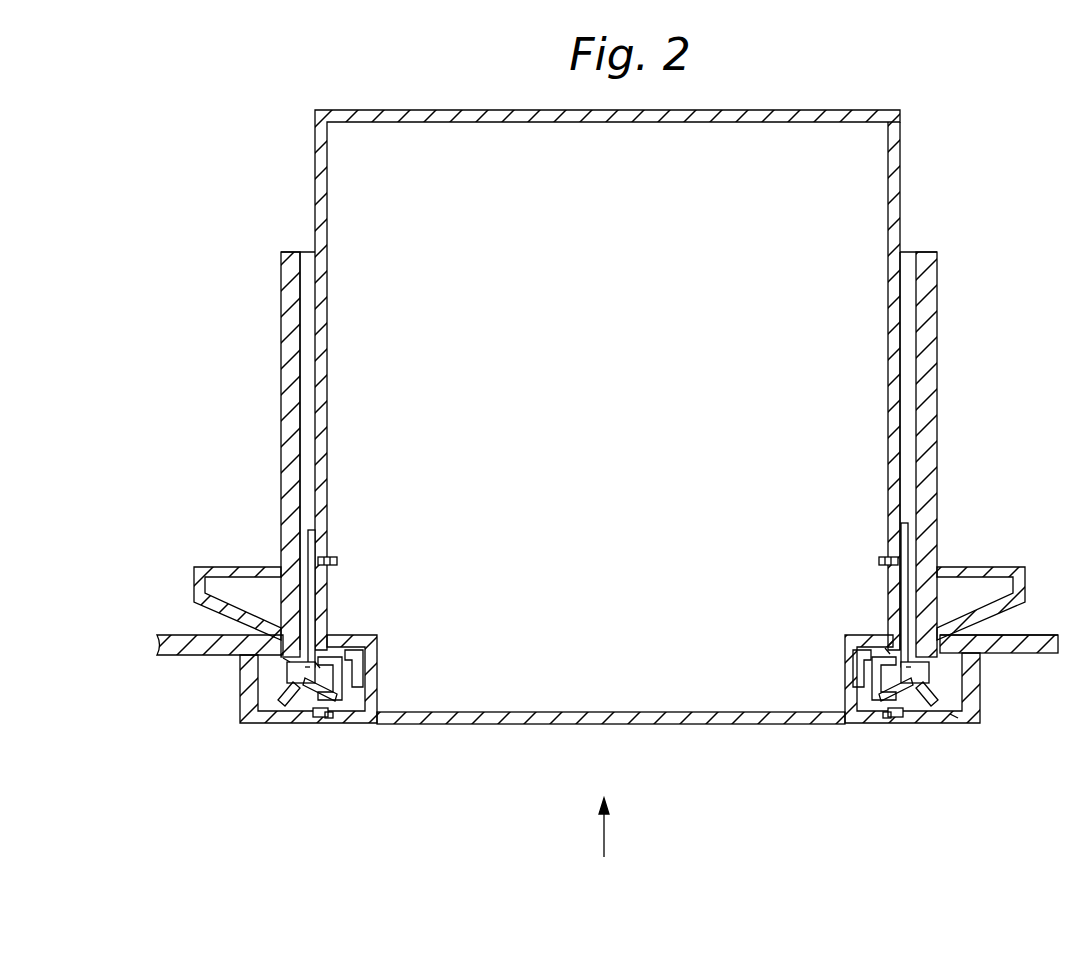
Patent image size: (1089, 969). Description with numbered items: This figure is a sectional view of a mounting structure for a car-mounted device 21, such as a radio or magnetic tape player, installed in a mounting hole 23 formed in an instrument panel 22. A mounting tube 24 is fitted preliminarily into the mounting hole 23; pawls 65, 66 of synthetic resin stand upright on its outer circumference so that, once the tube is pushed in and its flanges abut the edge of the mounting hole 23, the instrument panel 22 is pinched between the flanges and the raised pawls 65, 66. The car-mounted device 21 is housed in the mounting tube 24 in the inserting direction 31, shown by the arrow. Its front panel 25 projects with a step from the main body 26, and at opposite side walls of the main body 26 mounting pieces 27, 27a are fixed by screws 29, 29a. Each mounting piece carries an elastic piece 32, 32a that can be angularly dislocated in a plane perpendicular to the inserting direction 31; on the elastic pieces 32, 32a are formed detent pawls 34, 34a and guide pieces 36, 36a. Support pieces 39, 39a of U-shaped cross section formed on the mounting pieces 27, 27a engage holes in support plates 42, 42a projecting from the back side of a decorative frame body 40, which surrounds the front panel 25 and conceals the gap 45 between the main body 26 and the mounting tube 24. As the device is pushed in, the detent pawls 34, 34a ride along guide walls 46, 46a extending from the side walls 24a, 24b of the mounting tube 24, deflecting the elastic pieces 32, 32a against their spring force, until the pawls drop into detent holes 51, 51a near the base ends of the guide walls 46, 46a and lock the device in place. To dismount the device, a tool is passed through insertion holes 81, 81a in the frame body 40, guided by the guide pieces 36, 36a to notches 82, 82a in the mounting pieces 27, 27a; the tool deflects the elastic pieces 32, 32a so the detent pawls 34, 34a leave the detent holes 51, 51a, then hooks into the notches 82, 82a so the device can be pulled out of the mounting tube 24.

The car-mounted device 21 is at (646, 437).
The main body 26 is at (875, 208).
The front panel 25 is at (685, 724).
The mounting tube 24 is at (618, 454).
The side wall of mounting tube 24a is at (297, 388).
The side wall of mounting tube 24b is at (922, 366).
The pawl 65 is at (200, 572).
The pawl 66 is at (997, 570).
The instrument panel 22 is at (1045, 653).
The mounting hole 23 is at (947, 638).
The frame body 40 is at (247, 708).
The mounting piece 27 is at (314, 596).
The mounting piece 27a is at (902, 613).
The screw 29 is at (337, 561).
The screw 29a is at (879, 560).
The detent pawl 34 is at (293, 688).
The detent pawl 34a is at (912, 670).
The guide piece 36 is at (338, 676).
The guide piece 36a is at (867, 718).
The support piece 39 is at (348, 652).
The support piece 39a is at (872, 650).
The support plate 42 is at (343, 697).
The support plate 42a is at (892, 690).
The guide wall 46 is at (297, 698).
The guide wall 46a is at (947, 716).
The gap 45 is at (335, 714).
The insertion hole 81 is at (328, 719).
The insertion hole 81a is at (930, 718).
The elastic piece 32 is at (305, 668).
The elastic piece 32a is at (913, 714).
The notch 82 is at (317, 667).
The notch 82a is at (887, 650).
The detent hole 51 is at (287, 660).
The detent hole 51a is at (955, 717).
The inserting direction 31 is at (608, 824).